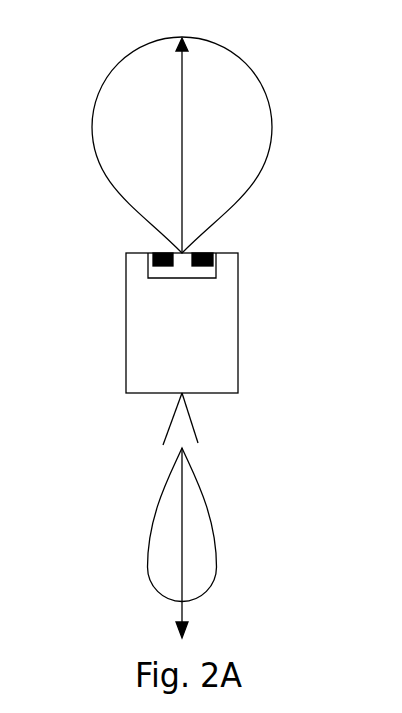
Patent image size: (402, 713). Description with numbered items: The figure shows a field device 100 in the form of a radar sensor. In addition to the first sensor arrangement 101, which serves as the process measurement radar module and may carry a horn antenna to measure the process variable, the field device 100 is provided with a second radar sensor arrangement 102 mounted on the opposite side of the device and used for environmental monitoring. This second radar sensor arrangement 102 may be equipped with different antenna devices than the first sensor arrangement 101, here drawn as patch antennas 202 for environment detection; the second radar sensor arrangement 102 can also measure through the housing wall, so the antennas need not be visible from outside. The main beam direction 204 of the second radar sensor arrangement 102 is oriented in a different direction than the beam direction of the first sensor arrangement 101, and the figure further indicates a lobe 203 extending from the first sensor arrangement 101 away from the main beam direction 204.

The field device 100 is at (267, 273).
The first sensor arrangement 101 is at (198, 442).
The radar sensor arrangement 102 is at (168, 279).
The patch antennas 202 is at (168, 253).
The lower radiation lobe 203 is at (184, 612).
The main beam direction 204 is at (182, 125).